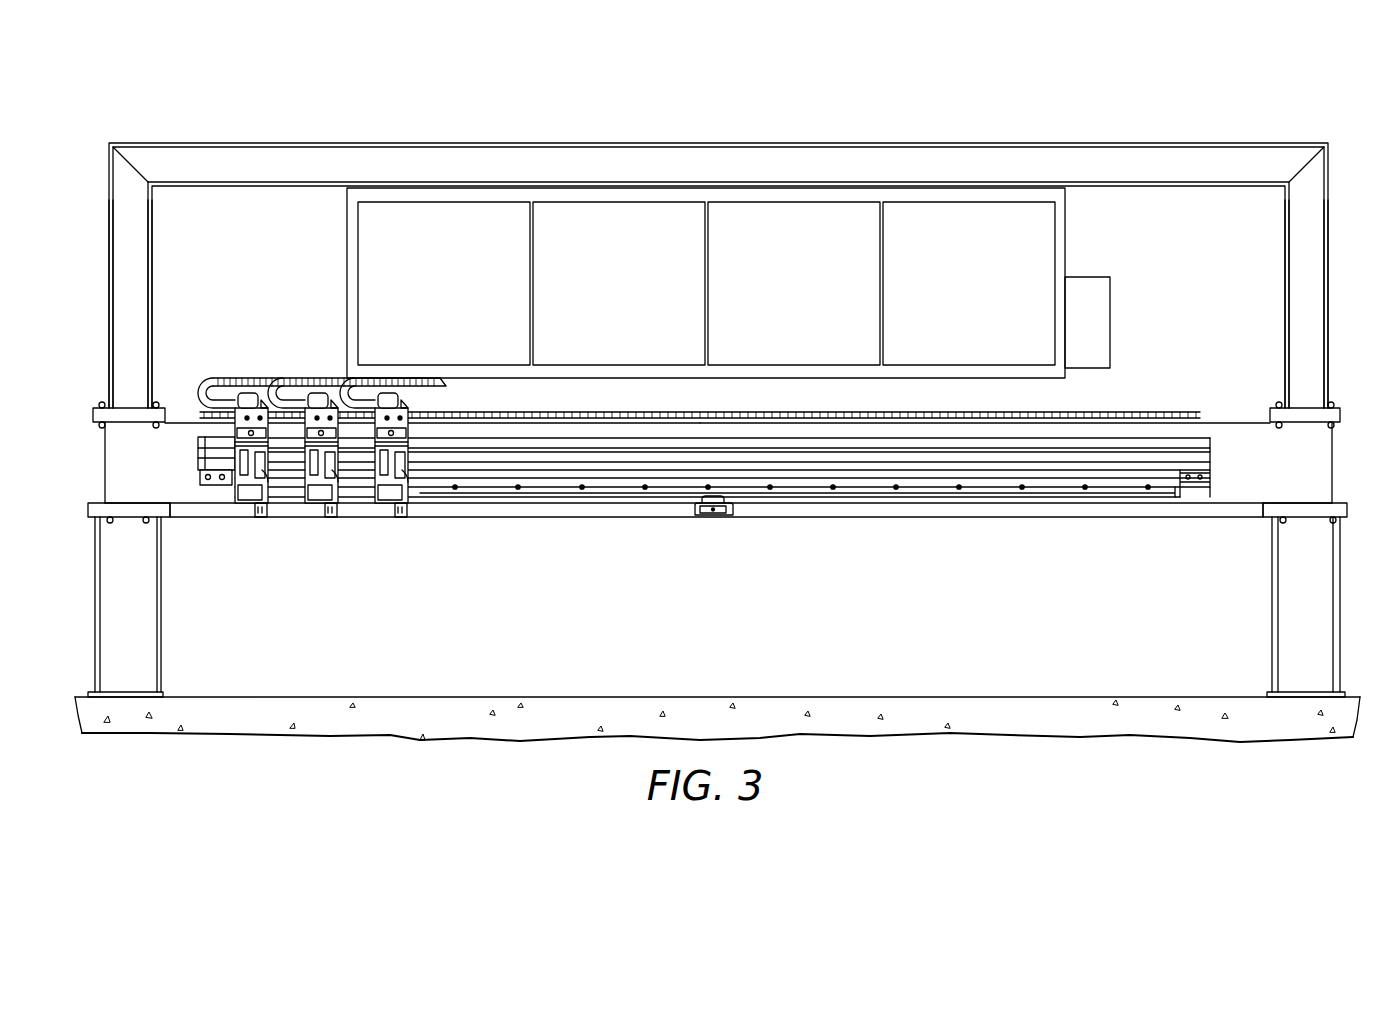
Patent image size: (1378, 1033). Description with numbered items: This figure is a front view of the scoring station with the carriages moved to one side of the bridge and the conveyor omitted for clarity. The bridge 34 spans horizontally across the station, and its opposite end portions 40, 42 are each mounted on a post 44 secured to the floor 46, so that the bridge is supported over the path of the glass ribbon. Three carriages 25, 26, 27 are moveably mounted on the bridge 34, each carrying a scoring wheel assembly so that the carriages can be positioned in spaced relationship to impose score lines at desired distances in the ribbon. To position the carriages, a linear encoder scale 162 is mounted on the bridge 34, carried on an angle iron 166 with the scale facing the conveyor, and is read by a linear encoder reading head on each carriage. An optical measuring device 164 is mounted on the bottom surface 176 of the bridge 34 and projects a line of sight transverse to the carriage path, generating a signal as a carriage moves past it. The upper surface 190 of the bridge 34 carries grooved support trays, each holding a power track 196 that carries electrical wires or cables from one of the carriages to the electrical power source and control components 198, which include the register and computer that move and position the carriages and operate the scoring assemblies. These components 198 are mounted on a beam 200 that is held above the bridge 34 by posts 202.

The beam 200 is at (1200, 143).
The posts 202 is at (108, 183).
The electrical power source and control components 198 is at (706, 283).
The power track 196 is at (196, 378).
The upper surface of the bridge 190 is at (1227, 410).
The end portion of the bridge 42 is at (118, 468).
The end portion of the bridge 40 is at (1322, 463).
The bridge 34 is at (594, 540).
The angle iron 166 is at (500, 492).
The linear encoder scale 162 is at (452, 497).
The bottom surface of the bridge 176 is at (845, 505).
The optical measuring device 164 is at (716, 517).
The carriage 25 is at (253, 540).
The carriage 26 is at (324, 540).
The carriage 27 is at (396, 540).
The post 44 is at (161, 650).
The floor 46 is at (1178, 728).